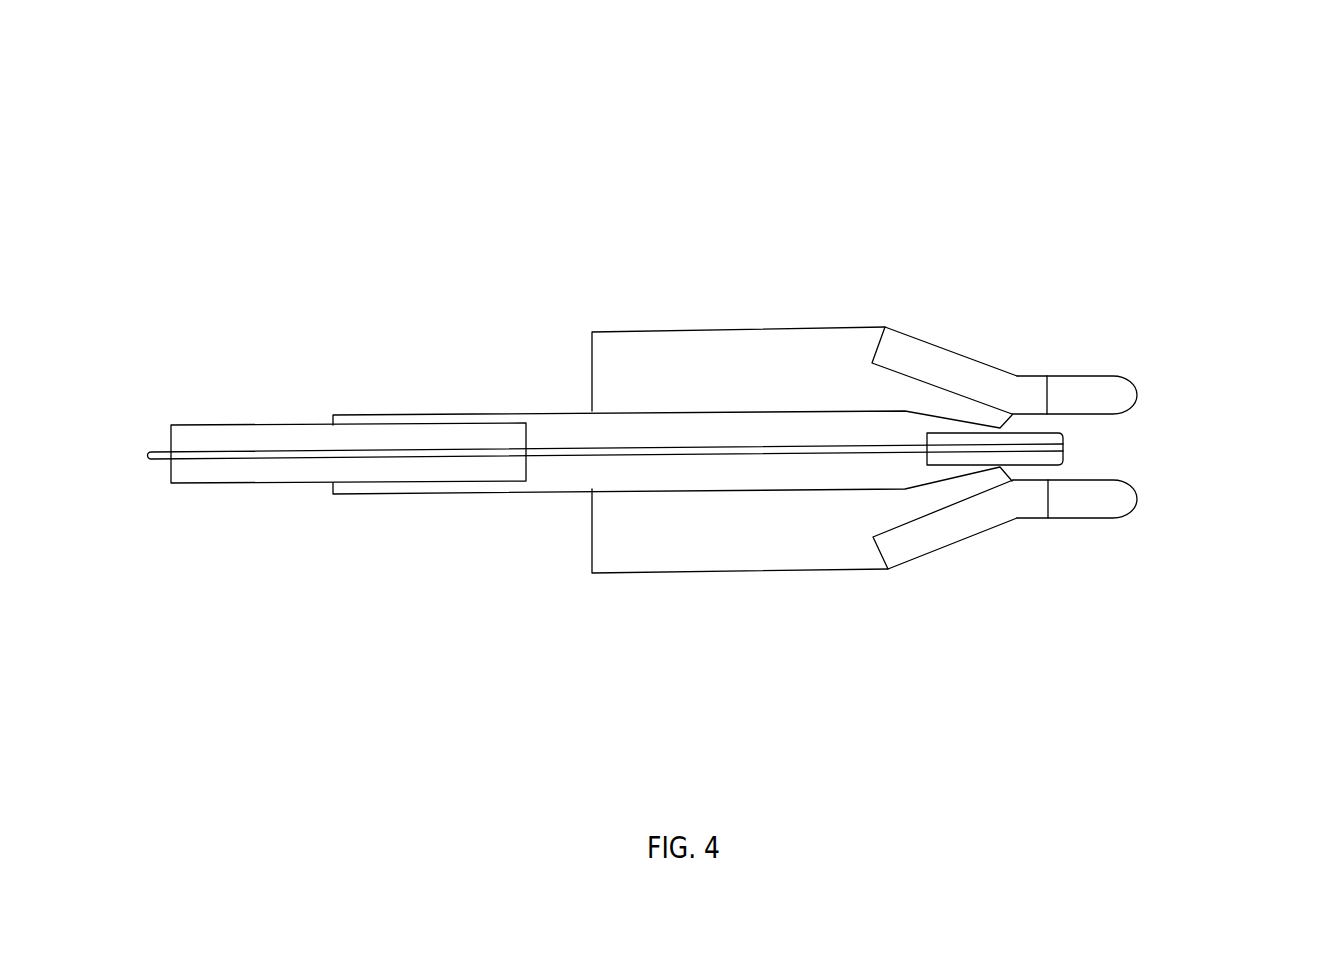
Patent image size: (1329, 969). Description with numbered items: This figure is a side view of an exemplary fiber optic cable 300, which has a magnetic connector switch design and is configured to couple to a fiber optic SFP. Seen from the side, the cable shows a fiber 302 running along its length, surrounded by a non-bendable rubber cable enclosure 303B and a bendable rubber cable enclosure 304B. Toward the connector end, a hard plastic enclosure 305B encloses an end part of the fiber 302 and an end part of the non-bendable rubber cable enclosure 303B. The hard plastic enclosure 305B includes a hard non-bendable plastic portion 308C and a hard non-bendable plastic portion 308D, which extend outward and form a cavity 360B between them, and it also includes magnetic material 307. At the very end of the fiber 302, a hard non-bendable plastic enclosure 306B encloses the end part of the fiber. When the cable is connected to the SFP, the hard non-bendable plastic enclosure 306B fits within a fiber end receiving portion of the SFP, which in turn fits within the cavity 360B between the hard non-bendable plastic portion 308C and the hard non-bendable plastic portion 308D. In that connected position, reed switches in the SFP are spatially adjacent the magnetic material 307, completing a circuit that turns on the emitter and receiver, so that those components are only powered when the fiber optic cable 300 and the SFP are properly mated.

The fiber optic cable 300 is at (884, 152).
The fiber 302 is at (213, 462).
The non-bendable rubber cable enclosure 303B is at (498, 410).
The bendable rubber cable enclosure 304B is at (308, 483).
The hard plastic enclosure 305B is at (605, 328).
The hard non-bendable plastic enclosure 306B is at (1073, 447).
The magnetic material 307 is at (987, 363).
The hard non-bendable plastic portion 308C is at (1115, 373).
The hard non-bendable plastic portion 308D is at (1077, 527).
The cavity 360B is at (1133, 470).